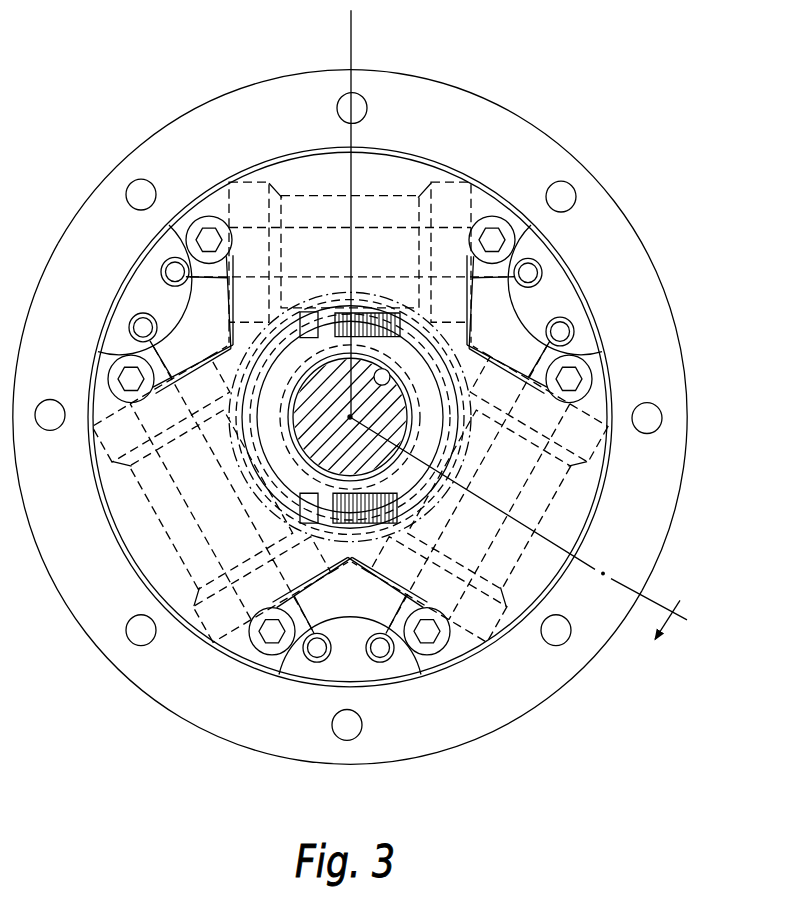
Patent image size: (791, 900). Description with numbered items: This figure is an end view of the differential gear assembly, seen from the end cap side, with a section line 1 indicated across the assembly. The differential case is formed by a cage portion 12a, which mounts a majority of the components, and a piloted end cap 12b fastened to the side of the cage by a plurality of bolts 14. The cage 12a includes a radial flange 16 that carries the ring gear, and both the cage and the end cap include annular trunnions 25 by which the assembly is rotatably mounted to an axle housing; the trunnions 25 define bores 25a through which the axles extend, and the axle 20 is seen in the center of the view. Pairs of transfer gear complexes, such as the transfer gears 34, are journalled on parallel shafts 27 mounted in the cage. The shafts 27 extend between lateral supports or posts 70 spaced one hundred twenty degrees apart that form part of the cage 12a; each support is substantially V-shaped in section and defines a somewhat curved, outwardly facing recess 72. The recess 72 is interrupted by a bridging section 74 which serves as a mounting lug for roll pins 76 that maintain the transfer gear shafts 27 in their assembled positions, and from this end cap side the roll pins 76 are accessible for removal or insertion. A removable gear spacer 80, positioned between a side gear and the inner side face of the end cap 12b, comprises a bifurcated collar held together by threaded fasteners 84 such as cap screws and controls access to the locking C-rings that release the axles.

The section line 1- 1 is at (694, 591).
The cage portion 12a is at (207, 109).
The piloted end cap 12b is at (592, 501).
The bolts 14 is at (195, 237).
The radial flange 16 is at (430, 101).
The axle 20 is at (358, 462).
The annular trunnions 25 is at (350, 417).
The bores 25a is at (390, 377).
The shafts 27 is at (470, 233).
The transfer gears 34 is at (400, 203).
The supports 70 is at (500, 325).
The recess 72 is at (118, 321).
The bridging section 74 is at (154, 314).
The roll pins 76 is at (162, 268).
The removable gear spacer 80 is at (465, 464).
The threaded fasteners 84 is at (362, 320).